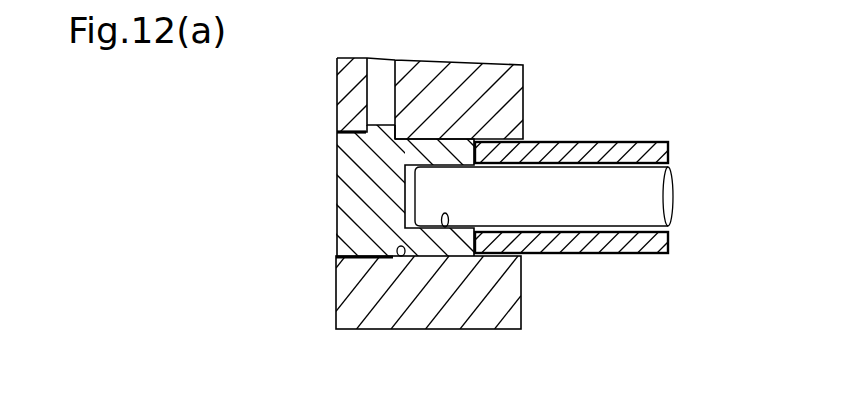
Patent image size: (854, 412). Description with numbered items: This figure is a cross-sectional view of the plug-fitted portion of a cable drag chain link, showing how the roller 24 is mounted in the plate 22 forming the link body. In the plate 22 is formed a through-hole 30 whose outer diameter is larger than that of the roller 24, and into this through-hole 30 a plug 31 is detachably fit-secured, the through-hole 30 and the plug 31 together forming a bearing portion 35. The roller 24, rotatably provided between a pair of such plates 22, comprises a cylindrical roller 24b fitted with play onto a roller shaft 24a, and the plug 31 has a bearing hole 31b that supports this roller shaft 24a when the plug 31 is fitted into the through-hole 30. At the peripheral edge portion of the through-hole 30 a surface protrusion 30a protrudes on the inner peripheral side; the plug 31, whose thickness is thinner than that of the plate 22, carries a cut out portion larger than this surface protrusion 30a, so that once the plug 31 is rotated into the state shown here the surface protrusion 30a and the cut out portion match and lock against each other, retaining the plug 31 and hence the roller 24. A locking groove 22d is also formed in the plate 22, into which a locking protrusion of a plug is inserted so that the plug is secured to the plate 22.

The plate 22 is at (518, 88).
The locking groove 22d is at (387, 67).
The roller 24 is at (625, 134).
The roller shaft 24a is at (658, 200).
The cylindrical roller 24b is at (575, 247).
The through-hole 30 is at (400, 257).
The surface protrusion 30a is at (350, 130).
The plug 31 is at (352, 215).
The bearing hole 31b is at (445, 227).
The bearing portion 35 is at (288, 209).